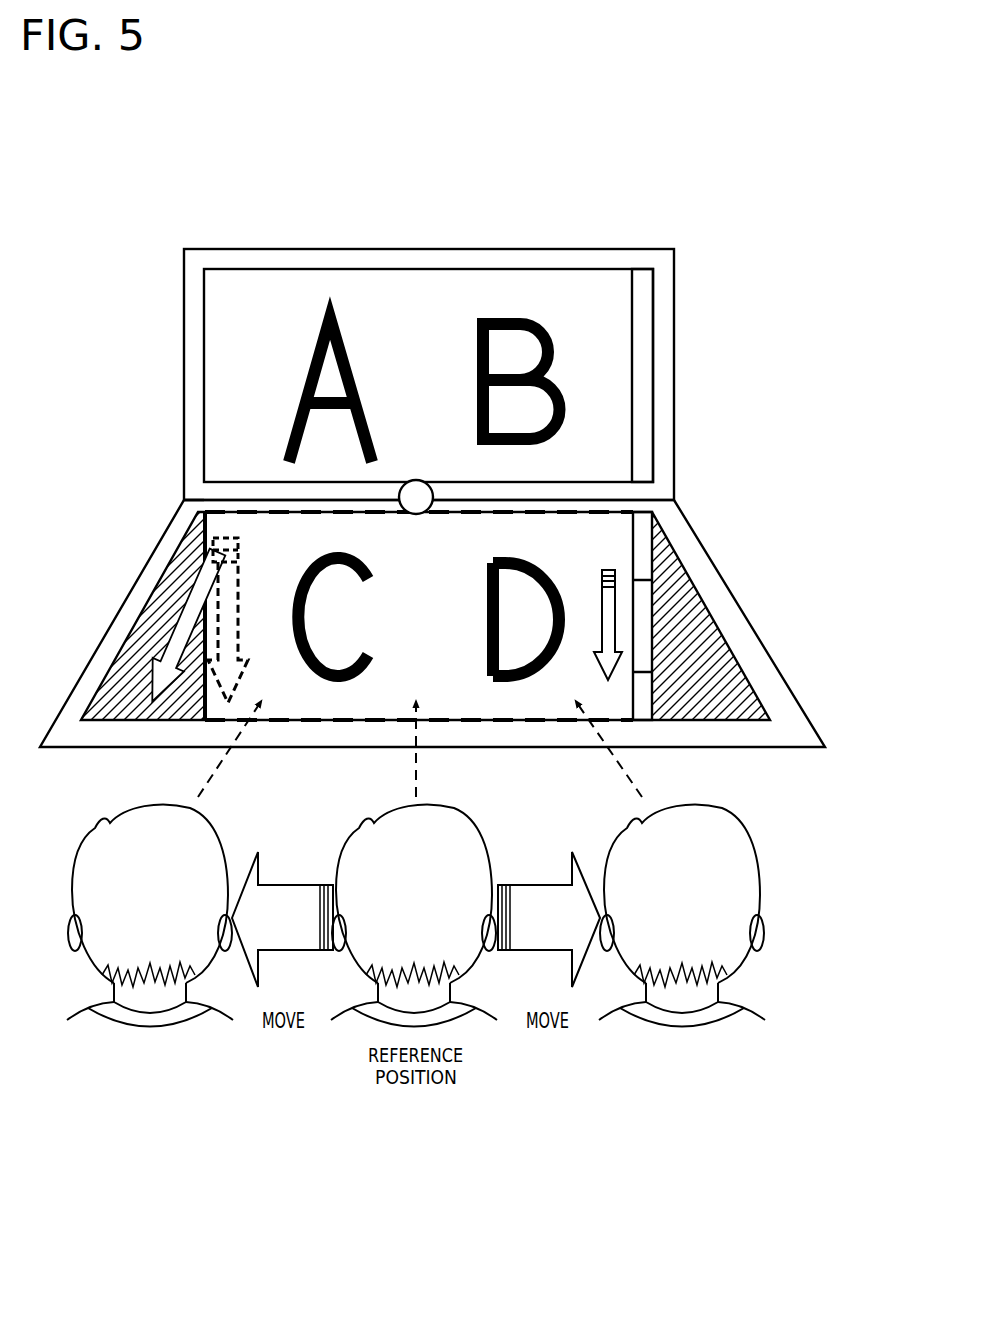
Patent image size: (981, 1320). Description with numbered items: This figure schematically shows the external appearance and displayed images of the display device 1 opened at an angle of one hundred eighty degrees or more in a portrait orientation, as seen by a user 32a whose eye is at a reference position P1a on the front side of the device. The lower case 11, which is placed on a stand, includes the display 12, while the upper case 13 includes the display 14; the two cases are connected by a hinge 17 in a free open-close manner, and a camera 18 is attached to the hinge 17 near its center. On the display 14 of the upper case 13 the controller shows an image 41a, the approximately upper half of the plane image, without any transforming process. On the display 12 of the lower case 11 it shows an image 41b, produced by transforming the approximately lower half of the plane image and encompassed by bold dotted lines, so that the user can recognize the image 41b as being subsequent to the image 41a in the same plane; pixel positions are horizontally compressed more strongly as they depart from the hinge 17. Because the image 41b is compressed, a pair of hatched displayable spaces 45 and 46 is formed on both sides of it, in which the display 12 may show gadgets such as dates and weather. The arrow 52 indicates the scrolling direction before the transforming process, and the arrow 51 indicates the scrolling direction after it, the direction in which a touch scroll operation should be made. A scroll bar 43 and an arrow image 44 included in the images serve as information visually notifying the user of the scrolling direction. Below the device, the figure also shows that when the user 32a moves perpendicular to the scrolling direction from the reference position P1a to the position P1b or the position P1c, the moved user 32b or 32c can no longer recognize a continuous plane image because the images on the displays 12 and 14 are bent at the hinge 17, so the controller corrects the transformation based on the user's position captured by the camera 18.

The display device 1 is at (423, 489).
The case 11 is at (691, 541).
The display 12 is at (709, 600).
The case 13 is at (616, 256).
The display 14 is at (466, 290).
The hinge 17 is at (182, 499).
The camera 18 is at (416, 490).
The image 41a is at (259, 283).
The image 41b is at (349, 702).
The scroll bar 43 is at (639, 412).
The arrow image 44 is at (615, 618).
The displayable space 45 is at (712, 665).
The displayable space 46 is at (137, 645).
The arrow 51 is at (207, 572).
The arrow 52 is at (226, 605).
The user 32a is at (401, 965).
The user 32b is at (50, 1046).
The user 32c is at (682, 965).
The reference position P1a is at (419, 1098).
The position P1b is at (152, 1092).
The position P1c is at (681, 1090).